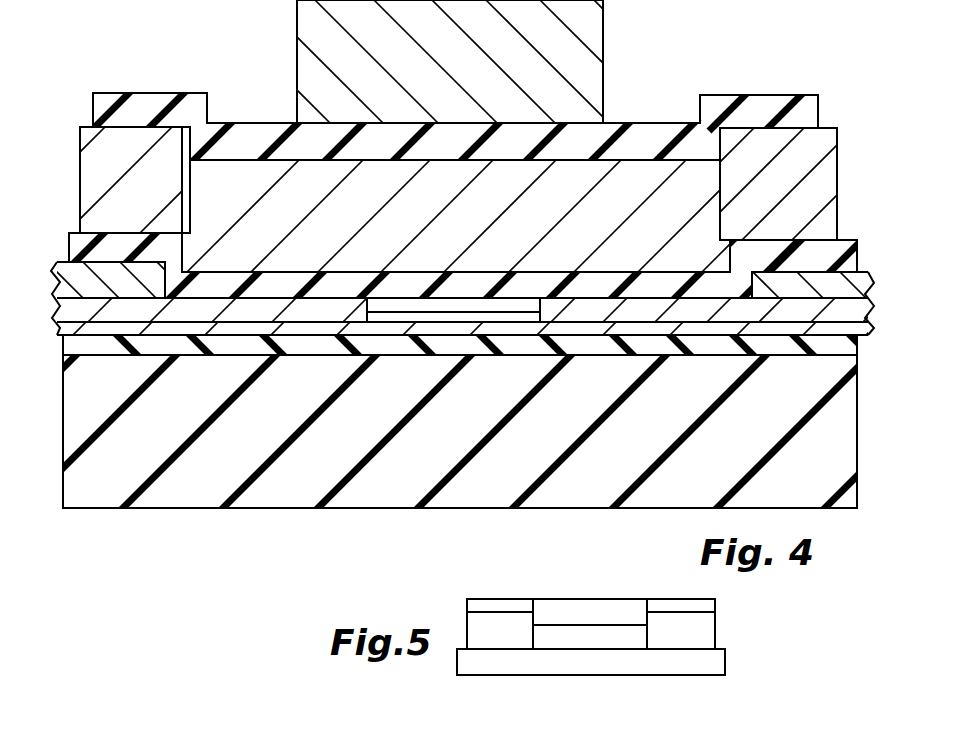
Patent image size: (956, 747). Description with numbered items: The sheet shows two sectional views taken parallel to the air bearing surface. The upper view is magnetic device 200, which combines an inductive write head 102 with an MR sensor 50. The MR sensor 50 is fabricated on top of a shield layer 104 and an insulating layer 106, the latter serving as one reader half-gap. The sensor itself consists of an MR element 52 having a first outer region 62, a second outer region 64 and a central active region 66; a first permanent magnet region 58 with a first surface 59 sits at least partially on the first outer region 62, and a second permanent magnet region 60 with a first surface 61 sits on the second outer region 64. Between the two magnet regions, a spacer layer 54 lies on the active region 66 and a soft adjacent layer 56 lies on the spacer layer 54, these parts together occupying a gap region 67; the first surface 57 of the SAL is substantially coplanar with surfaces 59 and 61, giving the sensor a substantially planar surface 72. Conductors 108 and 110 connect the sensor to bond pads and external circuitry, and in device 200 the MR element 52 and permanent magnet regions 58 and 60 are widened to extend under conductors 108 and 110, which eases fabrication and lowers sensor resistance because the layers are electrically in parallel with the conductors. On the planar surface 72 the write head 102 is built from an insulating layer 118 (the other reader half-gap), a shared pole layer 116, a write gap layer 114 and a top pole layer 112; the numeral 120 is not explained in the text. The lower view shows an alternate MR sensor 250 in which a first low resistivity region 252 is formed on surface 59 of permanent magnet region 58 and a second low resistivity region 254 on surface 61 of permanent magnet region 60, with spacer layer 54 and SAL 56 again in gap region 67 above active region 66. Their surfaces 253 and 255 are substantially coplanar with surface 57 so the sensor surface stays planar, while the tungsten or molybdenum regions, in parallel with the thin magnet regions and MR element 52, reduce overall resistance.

In FIG. 4, the MR sensor 50 is at (121, 512).
In FIG. 4, the MR element 52 is at (785, 330).
In FIG. 5, the MR element 52 is at (692, 662).
In FIG. 4, the spacer layer 54 is at (395, 318).
In FIG. 5, the spacer layer 54 is at (628, 635).
In FIG. 4, the soft adjacent layer 56 is at (380, 303).
In FIG. 5, the soft adjacent layer 56 is at (542, 607).
In FIG. 5, the first surface of SAL 57 is at (551, 596).
In FIG. 4, the first permanent magnet region 58 is at (96, 310).
In FIG. 5, the first permanent magnet region 58 is at (487, 616).
In FIG. 5, the first surface of first permanent magnet region 59 is at (493, 638).
In FIG. 4, the second permanent magnet region 60 is at (768, 305).
In FIG. 5, the second permanent magnet region 60 is at (680, 636).
In FIG. 5, the first surface of second permanent magnet region 61 is at (708, 617).
In FIG. 5, the first outer region 62 is at (510, 660).
In FIG. 5, the second outer region 64 is at (723, 665).
In FIG. 5, the active region 66 is at (615, 662).
In FIG. 5, the gap region 67 is at (565, 596).
In FIG. 4, the substantially planar surface 72 is at (198, 268).
In FIG. 4, the inductive write head 102 is at (610, 118).
In FIG. 4, the shield layer 104 is at (167, 490).
In FIG. 4, the insulating layer 106 is at (240, 340).
In FIG. 4, the first conductor 108 is at (92, 283).
In FIG. 4, the second conductor 110 is at (702, 92).
In FIG. 4, the top pole layer 112 is at (592, 23).
In FIG. 4, the write gap layer 114 is at (103, 97).
In FIG. 4, the shared pole layer 116 is at (650, 200).
In FIG. 4, the insulating layer 118 is at (672, 278).
In FIG. 4, the top covering layer 120 is at (292, 118).
In FIG. 4, the magnetic device 200 is at (222, 27).
In FIG. 5, the MR sensor 250 is at (438, 606).
In FIG. 5, the first low resistivity region 252 is at (467, 611).
In FIG. 5, the surface of first low resistivity region 253 is at (474, 596).
In FIG. 5, the second low resistivity region 254 is at (663, 607).
In FIG. 5, the surface of second low resistivity region 255 is at (653, 596).